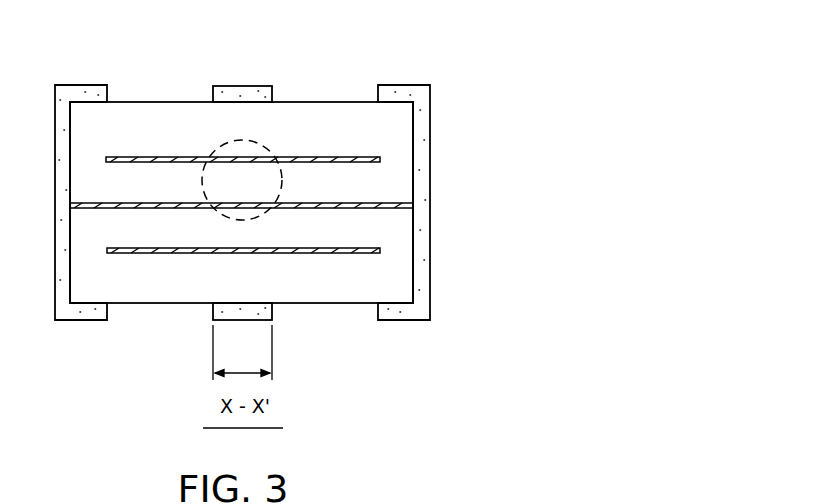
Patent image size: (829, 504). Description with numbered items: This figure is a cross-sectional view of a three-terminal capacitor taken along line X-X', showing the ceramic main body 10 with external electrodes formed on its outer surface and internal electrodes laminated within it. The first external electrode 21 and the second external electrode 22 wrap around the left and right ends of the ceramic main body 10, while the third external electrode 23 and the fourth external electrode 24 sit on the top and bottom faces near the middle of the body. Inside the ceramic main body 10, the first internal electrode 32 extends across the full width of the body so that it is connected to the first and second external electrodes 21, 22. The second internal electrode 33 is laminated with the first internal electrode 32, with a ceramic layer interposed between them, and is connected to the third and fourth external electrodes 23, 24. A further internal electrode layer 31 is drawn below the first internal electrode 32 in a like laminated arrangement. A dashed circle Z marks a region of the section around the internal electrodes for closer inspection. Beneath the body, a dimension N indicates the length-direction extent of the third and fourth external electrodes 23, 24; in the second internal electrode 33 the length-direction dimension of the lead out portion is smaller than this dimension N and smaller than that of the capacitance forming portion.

The ceramic main body 10 is at (165, 101).
The first external electrode 21 is at (90, 99).
The second external electrode 22 is at (405, 99).
The third external electrode 23 is at (244, 99).
The fourth external electrode 24 is at (242, 311).
The first internal electrode 31 is at (380, 251).
The first internal electrode 32 is at (413, 205).
The second internal electrode 33 is at (380, 161).
The enlarged region Z is at (268, 150).
The dimension N is at (242, 352).